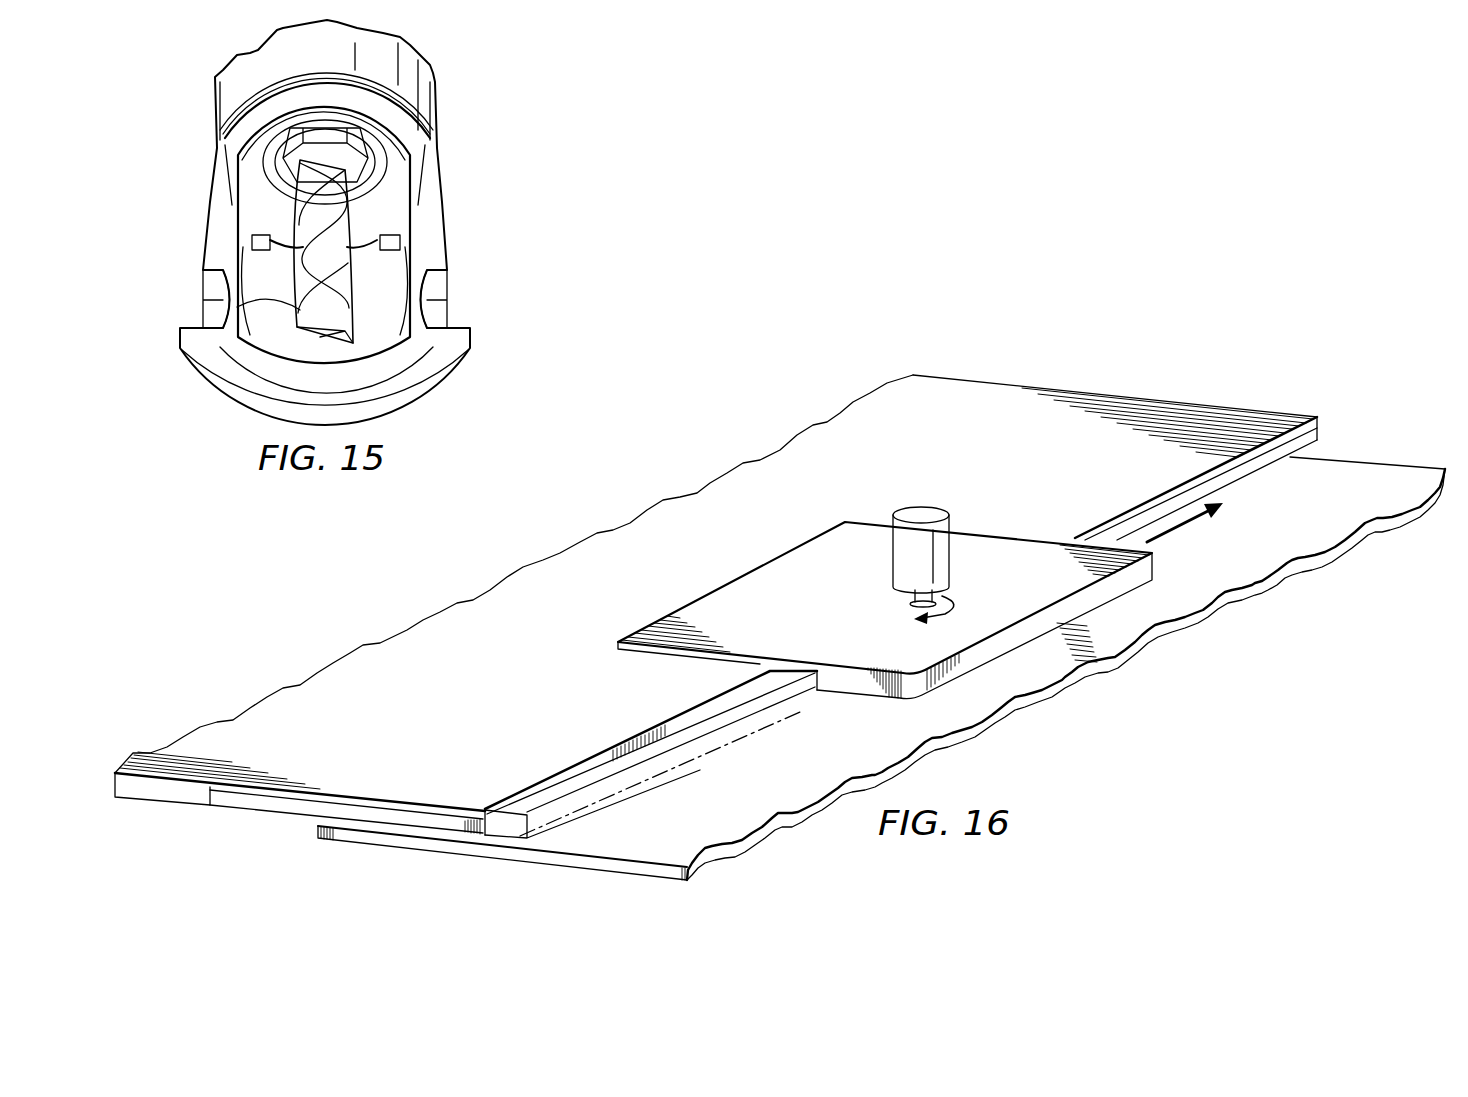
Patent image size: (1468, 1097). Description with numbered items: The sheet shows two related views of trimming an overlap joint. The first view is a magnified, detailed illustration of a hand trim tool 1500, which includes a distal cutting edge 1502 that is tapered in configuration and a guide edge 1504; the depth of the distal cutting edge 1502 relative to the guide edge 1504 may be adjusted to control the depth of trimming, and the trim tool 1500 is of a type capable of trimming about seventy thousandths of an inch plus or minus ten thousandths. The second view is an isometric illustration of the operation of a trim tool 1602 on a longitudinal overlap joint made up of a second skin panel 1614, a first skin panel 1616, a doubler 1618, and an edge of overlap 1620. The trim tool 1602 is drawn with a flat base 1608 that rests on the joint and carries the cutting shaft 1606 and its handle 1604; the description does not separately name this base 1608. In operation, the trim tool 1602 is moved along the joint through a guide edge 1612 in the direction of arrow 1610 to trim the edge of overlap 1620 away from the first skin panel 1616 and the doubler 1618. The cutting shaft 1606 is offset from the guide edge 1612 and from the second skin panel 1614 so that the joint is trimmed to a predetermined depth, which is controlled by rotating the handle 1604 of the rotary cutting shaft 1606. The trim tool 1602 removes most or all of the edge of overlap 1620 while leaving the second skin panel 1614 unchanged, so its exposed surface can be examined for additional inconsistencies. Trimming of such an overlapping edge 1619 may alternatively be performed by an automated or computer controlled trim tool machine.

In FIG. 15, the trim tool 1500 is at (474, 117).
In FIG. 15, the distal cutting edge 1502 is at (238, 310).
In FIG. 15, the guide edge 1504 is at (433, 308).
In FIG. 16, the trim tool 1602 is at (925, 551).
In FIG. 16, the handle 1604 is at (922, 505).
In FIG. 16, the cutting shaft 1606 is at (906, 604).
In FIG. 16, the carriage platform 1608 is at (1042, 548).
In FIG. 16, the arrow 1610 is at (1182, 526).
In FIG. 16, the guide edge 1612 is at (816, 683).
In FIG. 16, the second skin panel 1614 is at (1396, 470).
In FIG. 16, the first skin panel 1616 is at (192, 746).
In FIG. 16, the doubler 1618 is at (245, 813).
In FIG. 16, the overlapping edge 1619 is at (1170, 402).
In FIG. 16, the edge of overlap 1620 is at (660, 765).